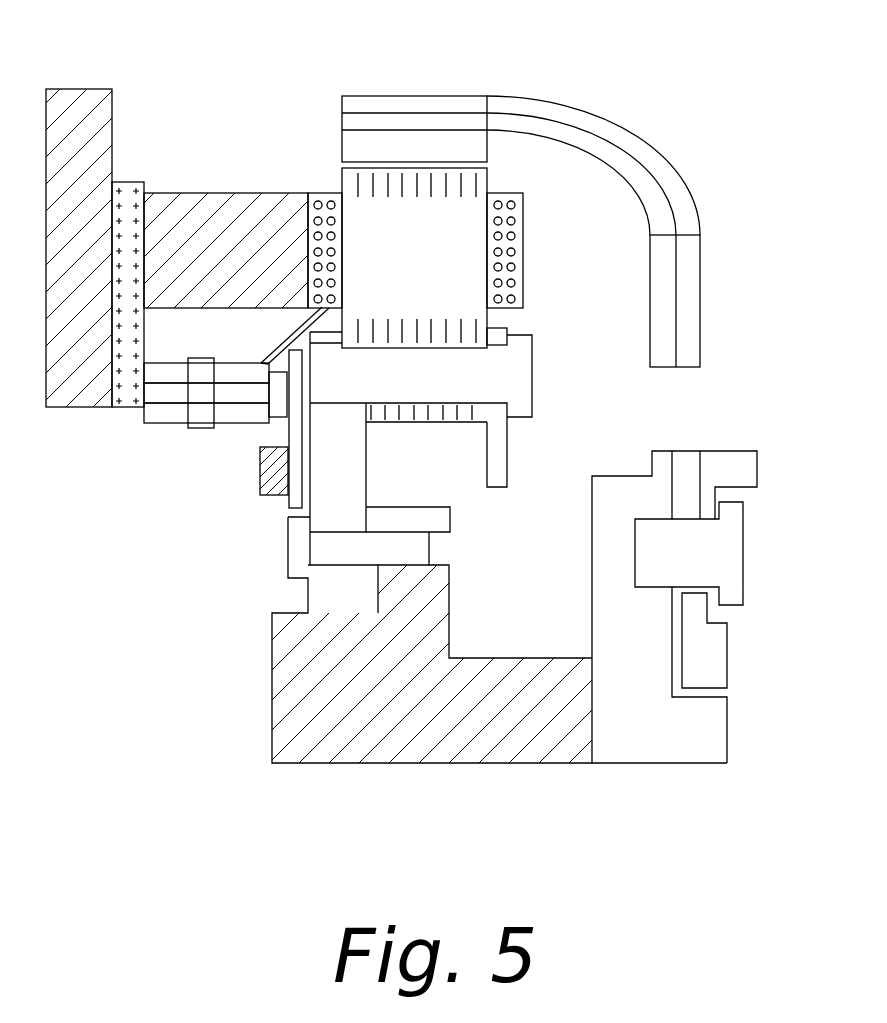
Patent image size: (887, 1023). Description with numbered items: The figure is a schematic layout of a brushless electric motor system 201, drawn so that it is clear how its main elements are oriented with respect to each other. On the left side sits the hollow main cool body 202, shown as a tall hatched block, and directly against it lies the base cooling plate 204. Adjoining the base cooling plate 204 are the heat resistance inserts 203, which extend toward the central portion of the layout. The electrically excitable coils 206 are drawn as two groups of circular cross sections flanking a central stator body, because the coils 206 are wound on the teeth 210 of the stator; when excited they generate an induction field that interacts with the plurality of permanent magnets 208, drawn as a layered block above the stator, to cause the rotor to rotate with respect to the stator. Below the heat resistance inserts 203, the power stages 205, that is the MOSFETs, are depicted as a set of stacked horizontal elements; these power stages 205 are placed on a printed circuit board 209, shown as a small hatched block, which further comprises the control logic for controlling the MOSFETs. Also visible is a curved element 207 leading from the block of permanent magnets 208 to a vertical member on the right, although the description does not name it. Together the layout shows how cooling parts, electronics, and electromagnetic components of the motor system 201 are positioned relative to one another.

The brushless electric motor system 201 is at (758, 74).
The hollow main cool body 202 is at (68, 89).
The heat resistance inserts 203 is at (207, 193).
The base cooling plate 204 is at (127, 182).
The power stages 205 is at (133, 421).
The electrically excitable coils 206 is at (324, 193).
The flexible tube 207 is at (415, 120).
The permanent magnets 208 is at (375, 143).
The printed circuit board 209 is at (273, 505).
The teeth 210 is at (462, 310).